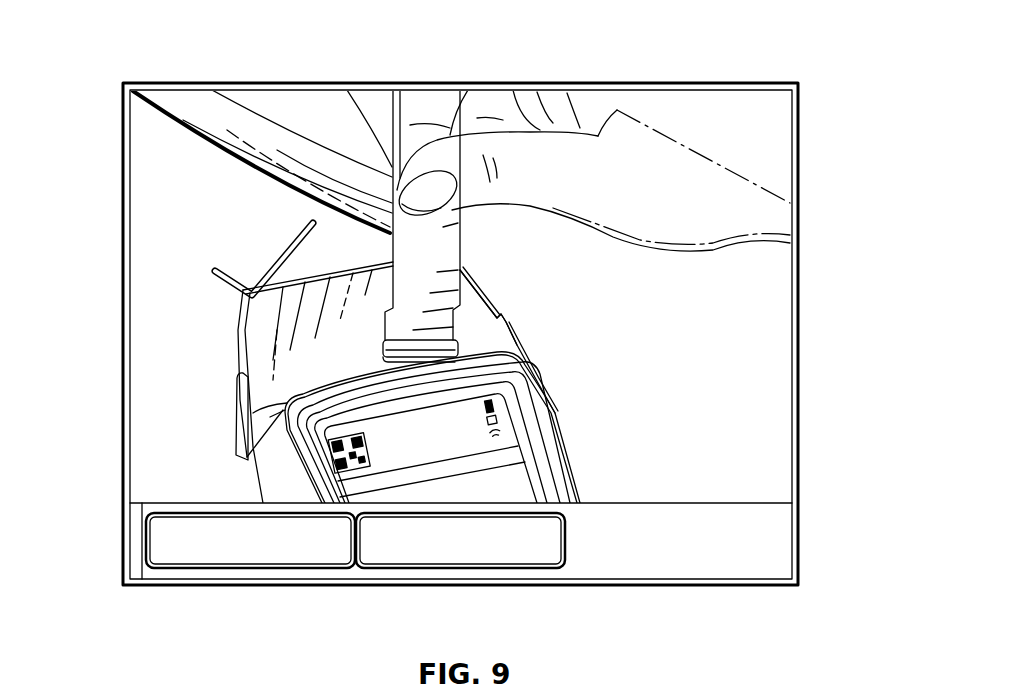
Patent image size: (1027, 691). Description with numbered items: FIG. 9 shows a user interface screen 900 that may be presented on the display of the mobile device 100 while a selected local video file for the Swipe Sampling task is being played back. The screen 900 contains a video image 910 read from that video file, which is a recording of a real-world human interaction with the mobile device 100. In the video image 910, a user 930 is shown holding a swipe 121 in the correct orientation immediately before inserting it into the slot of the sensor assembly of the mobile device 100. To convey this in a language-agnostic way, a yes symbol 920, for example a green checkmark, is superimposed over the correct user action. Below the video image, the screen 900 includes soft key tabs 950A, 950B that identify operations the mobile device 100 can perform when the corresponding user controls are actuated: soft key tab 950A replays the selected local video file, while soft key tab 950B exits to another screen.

The user interface screen 900 is at (199, 32).
The video image 910 is at (137, 140).
The yes symbol 920 is at (227, 271).
The user 930 is at (770, 152).
The mobile device 100 is at (235, 449).
The swipe 121 is at (460, 253).
The soft key tab 950A is at (250, 568).
The soft key tab 950B is at (460, 568).